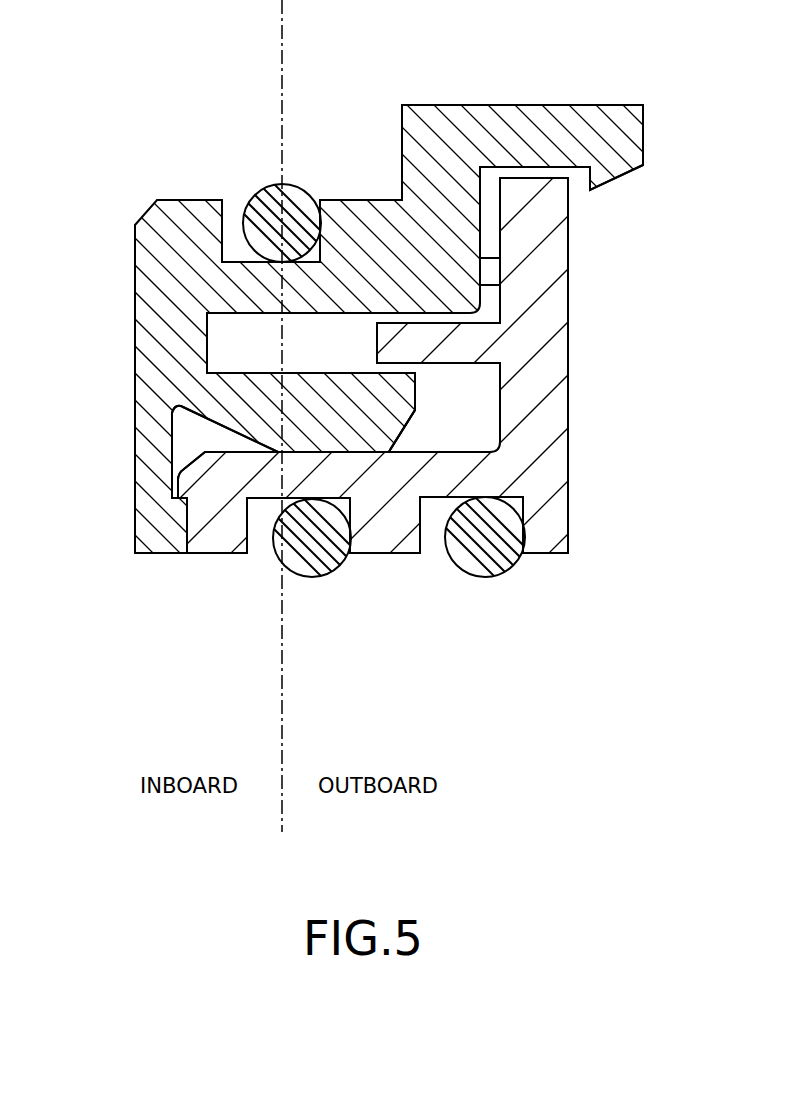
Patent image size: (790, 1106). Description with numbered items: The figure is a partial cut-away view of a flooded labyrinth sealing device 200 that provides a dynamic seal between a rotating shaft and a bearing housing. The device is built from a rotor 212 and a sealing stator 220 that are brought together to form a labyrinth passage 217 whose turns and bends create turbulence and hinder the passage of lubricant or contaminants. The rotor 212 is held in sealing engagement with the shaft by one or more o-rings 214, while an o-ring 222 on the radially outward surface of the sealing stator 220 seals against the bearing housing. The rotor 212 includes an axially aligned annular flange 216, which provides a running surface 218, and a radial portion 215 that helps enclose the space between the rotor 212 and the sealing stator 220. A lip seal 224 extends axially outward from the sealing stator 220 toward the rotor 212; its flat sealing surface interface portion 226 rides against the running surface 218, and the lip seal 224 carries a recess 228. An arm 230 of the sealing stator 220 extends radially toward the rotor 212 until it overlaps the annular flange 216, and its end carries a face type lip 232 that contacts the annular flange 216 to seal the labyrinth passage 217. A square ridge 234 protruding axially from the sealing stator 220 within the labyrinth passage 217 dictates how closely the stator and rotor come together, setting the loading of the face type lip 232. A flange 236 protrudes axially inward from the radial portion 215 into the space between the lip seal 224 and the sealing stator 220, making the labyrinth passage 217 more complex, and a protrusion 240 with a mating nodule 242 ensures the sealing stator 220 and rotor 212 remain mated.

The labyrinth sealing device 200 is at (685, 66).
The rotor 212 is at (533, 443).
The o-ring 214 is at (327, 577).
The radial portion 215 is at (568, 323).
The annular flange 216 is at (284, 577).
The labyrinth passage 217 is at (245, 345).
The running surface 218 is at (214, 445).
The sealing stator 220 is at (430, 113).
The o-ring 222 is at (268, 188).
The lip seal 224 is at (393, 398).
The sealing surface interface portion 226 is at (309, 452).
The recess 228 is at (332, 443).
The arm 230 is at (153, 445).
The face type lip 232 is at (174, 547).
The square ridge 234 is at (490, 272).
The flange 236 is at (437, 348).
The protrusion 240 is at (613, 166).
The mating nodule 242 is at (535, 207).